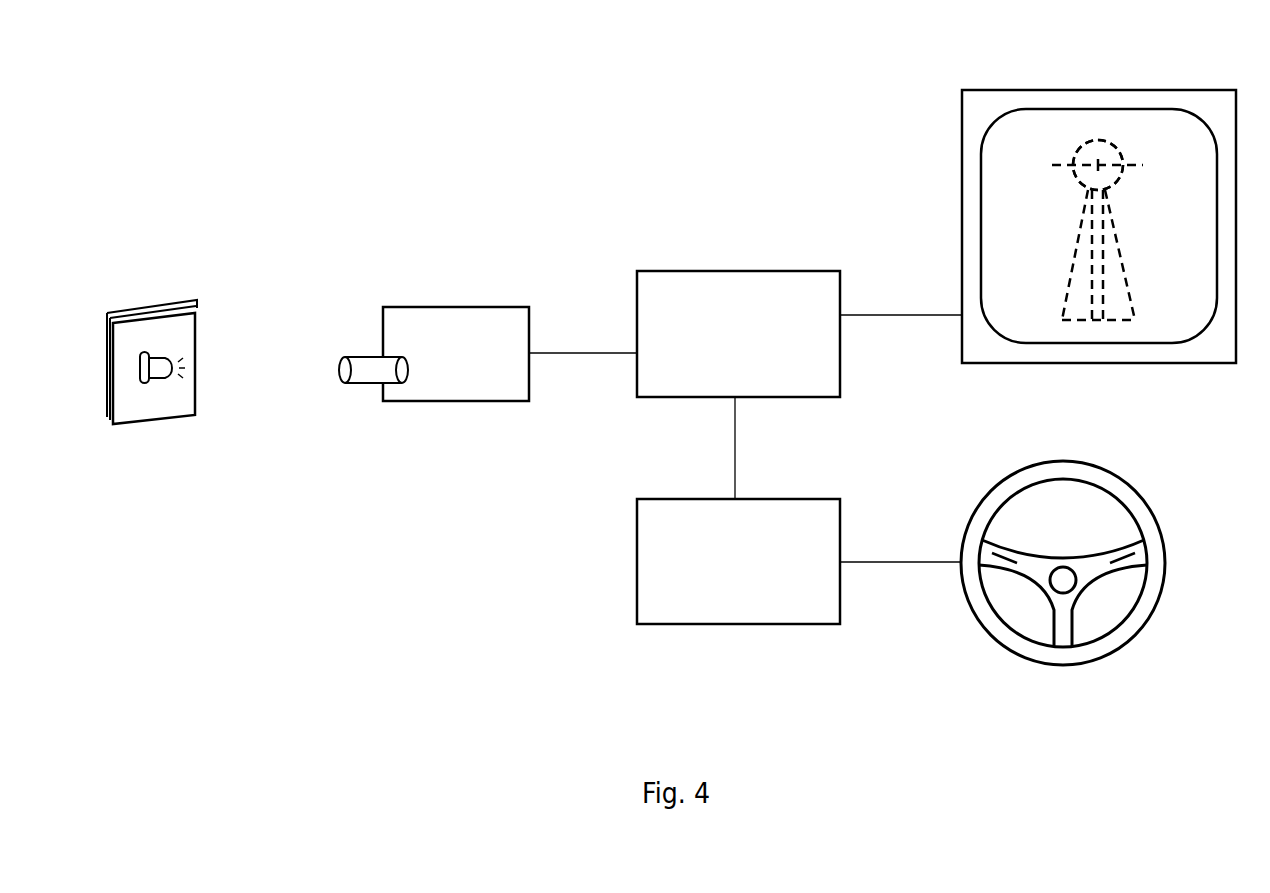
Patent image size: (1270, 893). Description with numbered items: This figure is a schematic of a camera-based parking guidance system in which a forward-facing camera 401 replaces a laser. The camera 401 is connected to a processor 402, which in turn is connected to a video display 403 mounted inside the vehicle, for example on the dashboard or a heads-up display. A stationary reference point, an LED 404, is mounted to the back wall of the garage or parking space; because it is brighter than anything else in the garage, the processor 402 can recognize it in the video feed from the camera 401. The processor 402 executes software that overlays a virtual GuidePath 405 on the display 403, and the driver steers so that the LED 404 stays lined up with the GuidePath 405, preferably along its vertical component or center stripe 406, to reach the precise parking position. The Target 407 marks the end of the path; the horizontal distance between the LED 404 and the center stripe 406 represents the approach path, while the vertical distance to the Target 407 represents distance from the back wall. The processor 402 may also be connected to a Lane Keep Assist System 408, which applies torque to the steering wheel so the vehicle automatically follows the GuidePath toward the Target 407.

The camera 401 is at (439, 286).
The processor 402 is at (733, 295).
The video display 403 is at (953, 76).
The LED 404 is at (152, 377).
The virtual GuidePath 405 is at (1156, 146).
The vertical component of virtual GuidePath 406 is at (1102, 313).
The Target 407 is at (1096, 145).
The Lane Keep Assist System (LKAS) 408 is at (745, 643).